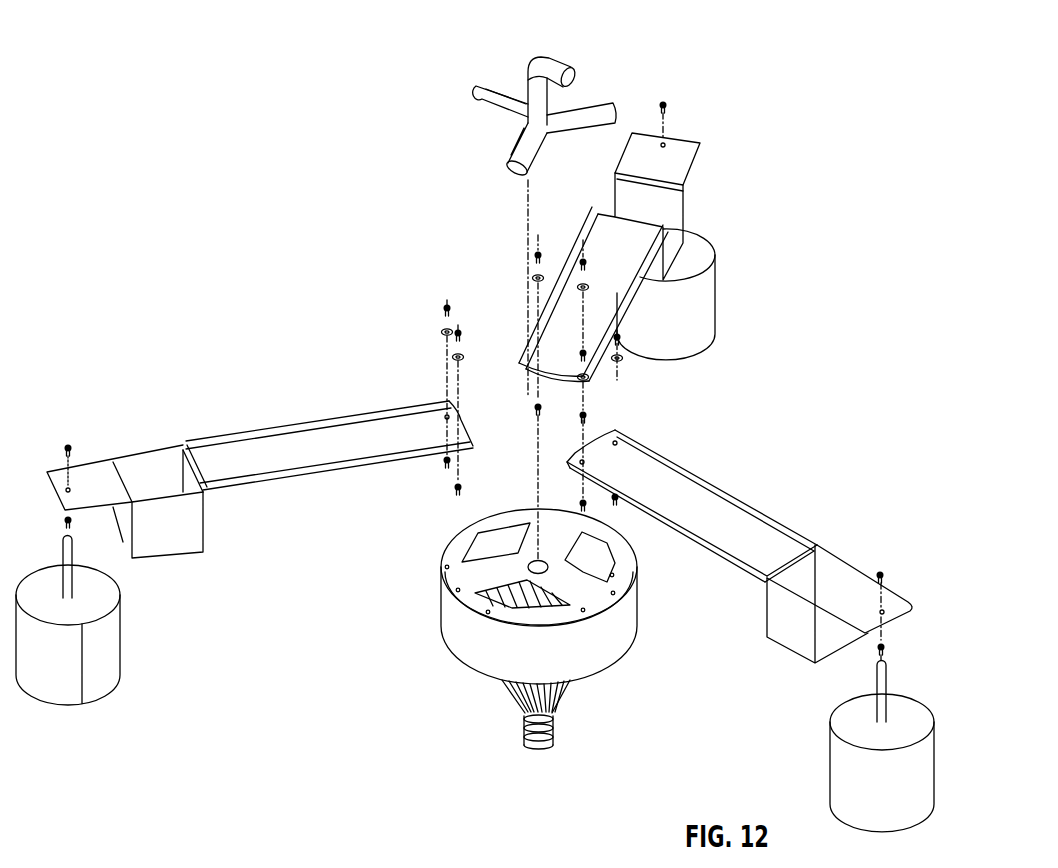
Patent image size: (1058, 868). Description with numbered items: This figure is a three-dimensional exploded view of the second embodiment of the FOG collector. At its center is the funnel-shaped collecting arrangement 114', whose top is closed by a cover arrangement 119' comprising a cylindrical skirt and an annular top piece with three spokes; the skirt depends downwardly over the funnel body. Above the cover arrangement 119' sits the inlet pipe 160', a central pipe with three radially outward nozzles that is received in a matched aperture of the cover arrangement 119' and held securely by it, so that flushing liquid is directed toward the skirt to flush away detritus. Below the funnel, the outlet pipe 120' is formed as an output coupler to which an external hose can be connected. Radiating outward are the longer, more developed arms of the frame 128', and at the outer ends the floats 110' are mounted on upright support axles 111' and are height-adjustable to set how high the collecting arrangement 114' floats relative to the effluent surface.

The inlet pipe 160' is at (544, 92).
The frame 128' is at (260, 479).
The cover arrangement 119' is at (539, 588).
The collecting arrangement 114' is at (543, 656).
The outlet pipe 120' is at (542, 759).
The upright support axle 111' is at (909, 688).
The float 110' is at (882, 763).